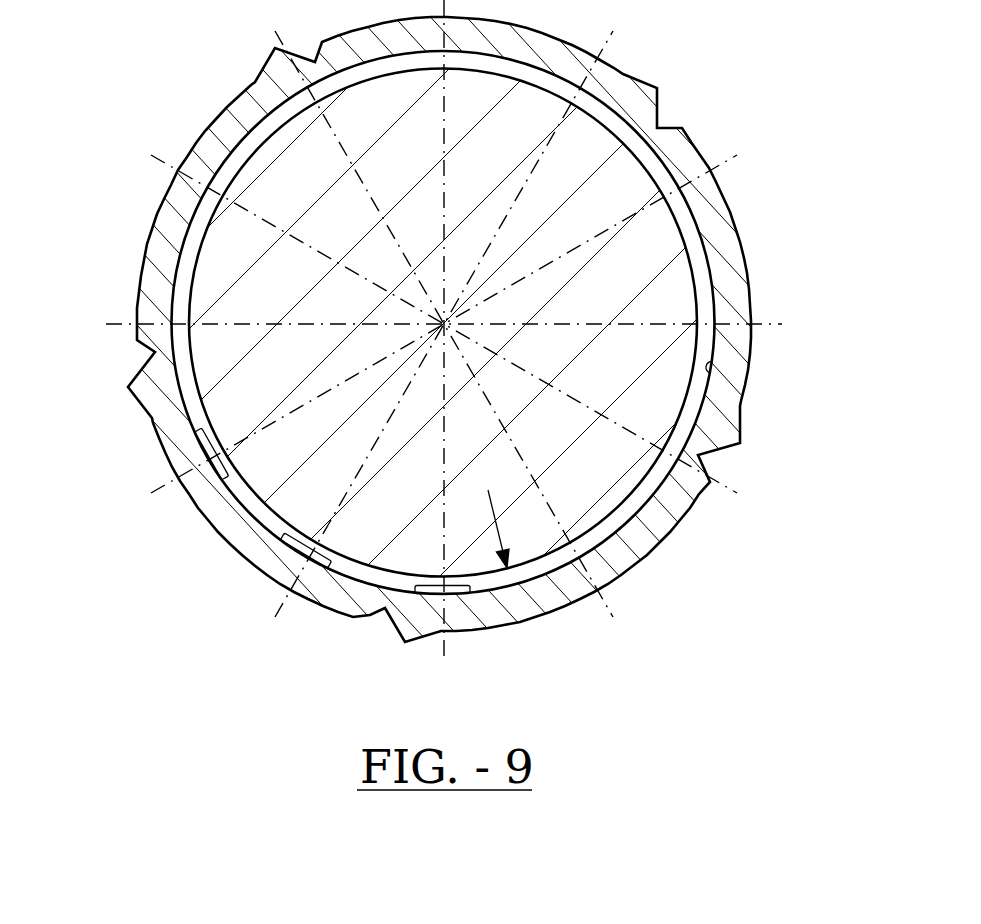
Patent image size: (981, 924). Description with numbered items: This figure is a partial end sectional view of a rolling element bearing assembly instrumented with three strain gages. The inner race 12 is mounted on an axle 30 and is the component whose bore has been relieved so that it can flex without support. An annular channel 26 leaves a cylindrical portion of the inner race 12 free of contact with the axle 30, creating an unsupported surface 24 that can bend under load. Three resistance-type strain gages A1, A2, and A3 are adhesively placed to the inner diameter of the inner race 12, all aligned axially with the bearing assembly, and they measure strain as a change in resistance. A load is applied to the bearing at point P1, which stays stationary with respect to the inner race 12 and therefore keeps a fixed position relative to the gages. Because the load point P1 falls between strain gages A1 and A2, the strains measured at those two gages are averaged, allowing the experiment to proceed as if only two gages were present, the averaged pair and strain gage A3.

The inner race 12 is at (160, 426).
The unsupported surface 24 is at (712, 377).
The channel 26 is at (268, 512).
The axle 30 is at (225, 265).
The strain gage A1 is at (415, 596).
The strain gage A2 is at (595, 542).
The strain gage A3 is at (695, 450).
The load point P1 is at (503, 528).